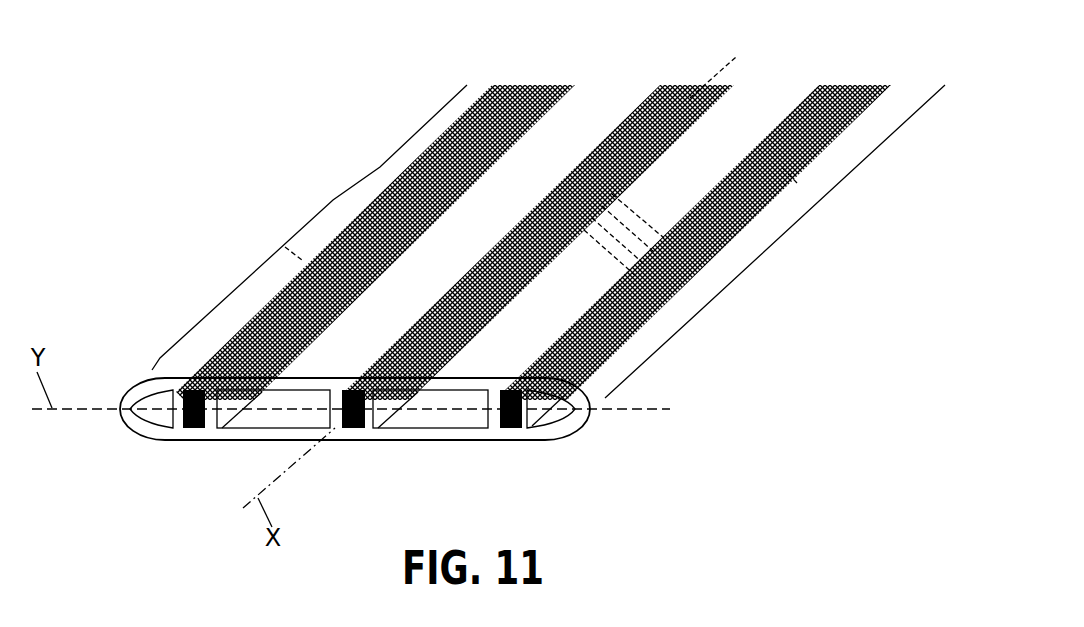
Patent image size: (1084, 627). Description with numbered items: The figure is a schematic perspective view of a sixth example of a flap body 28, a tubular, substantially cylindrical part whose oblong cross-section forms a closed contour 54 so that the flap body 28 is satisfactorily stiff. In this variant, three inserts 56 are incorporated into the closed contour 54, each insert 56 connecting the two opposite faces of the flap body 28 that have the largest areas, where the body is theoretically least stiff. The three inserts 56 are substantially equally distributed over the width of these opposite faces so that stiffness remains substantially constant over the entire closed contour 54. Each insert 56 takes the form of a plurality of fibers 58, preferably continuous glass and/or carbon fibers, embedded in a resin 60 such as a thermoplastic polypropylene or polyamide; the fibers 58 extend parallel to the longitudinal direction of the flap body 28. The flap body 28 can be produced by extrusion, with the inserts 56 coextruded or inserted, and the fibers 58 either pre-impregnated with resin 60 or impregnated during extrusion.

The flap body 28 is at (372, 168).
The closed contour 54 is at (562, 434).
The insert 56 is at (192, 440).
The fibers 58 is at (285, 247).
The resin 60 is at (358, 233).